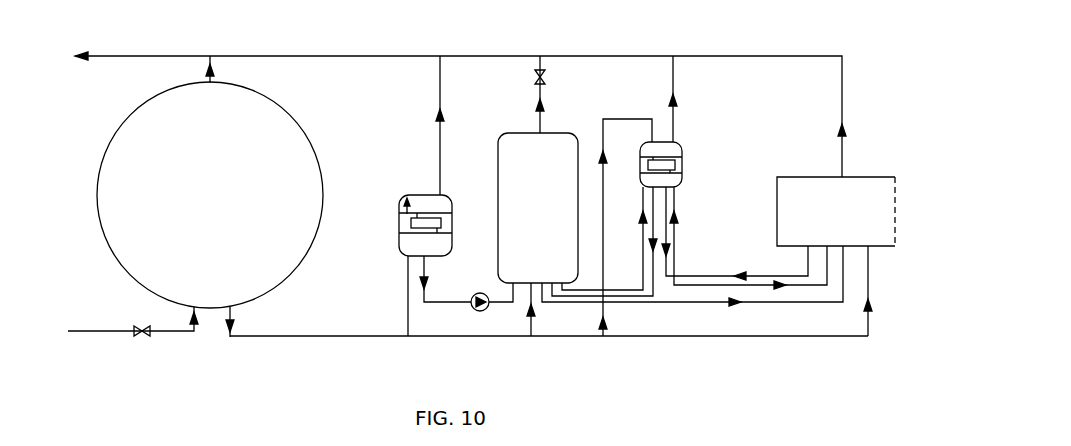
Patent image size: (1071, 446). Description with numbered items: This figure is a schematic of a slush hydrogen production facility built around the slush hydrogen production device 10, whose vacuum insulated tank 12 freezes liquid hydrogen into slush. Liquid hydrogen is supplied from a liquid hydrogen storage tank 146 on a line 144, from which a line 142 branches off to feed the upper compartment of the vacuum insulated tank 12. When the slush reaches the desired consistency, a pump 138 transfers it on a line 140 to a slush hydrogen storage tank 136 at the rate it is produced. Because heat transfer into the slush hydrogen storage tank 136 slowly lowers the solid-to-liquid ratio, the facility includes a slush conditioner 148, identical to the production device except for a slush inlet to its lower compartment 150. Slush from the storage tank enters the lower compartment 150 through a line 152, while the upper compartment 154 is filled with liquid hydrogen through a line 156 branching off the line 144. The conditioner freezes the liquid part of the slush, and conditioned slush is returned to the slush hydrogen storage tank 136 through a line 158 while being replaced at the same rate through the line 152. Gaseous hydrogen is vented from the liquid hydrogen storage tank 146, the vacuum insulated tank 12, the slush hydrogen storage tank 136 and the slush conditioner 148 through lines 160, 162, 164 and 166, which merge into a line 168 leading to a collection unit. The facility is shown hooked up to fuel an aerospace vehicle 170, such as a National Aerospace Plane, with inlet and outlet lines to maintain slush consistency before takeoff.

The slush hydrogen production device 10 is at (420, 193).
The vacuum insulated tank 12 is at (453, 230).
The slush hydrogen storage tank 136 is at (555, 228).
The pump 138 is at (472, 295).
The line 140 is at (440, 302).
The line 142 is at (407, 276).
The line 144 is at (262, 338).
The liquid hydrogen storage tank 146 is at (229, 207).
The slush conditioner 148 is at (641, 167).
The lower compartment 150 is at (683, 178).
The line 152 is at (643, 272).
The upper compartment 154 is at (680, 147).
The line 156 is at (603, 125).
The line 158 is at (650, 291).
The line 160 is at (208, 82).
The line 162 is at (438, 70).
The line 164 is at (540, 88).
The line 166 is at (675, 75).
The line 168 is at (405, 55).
The aerospace vehicle 170 is at (846, 222).